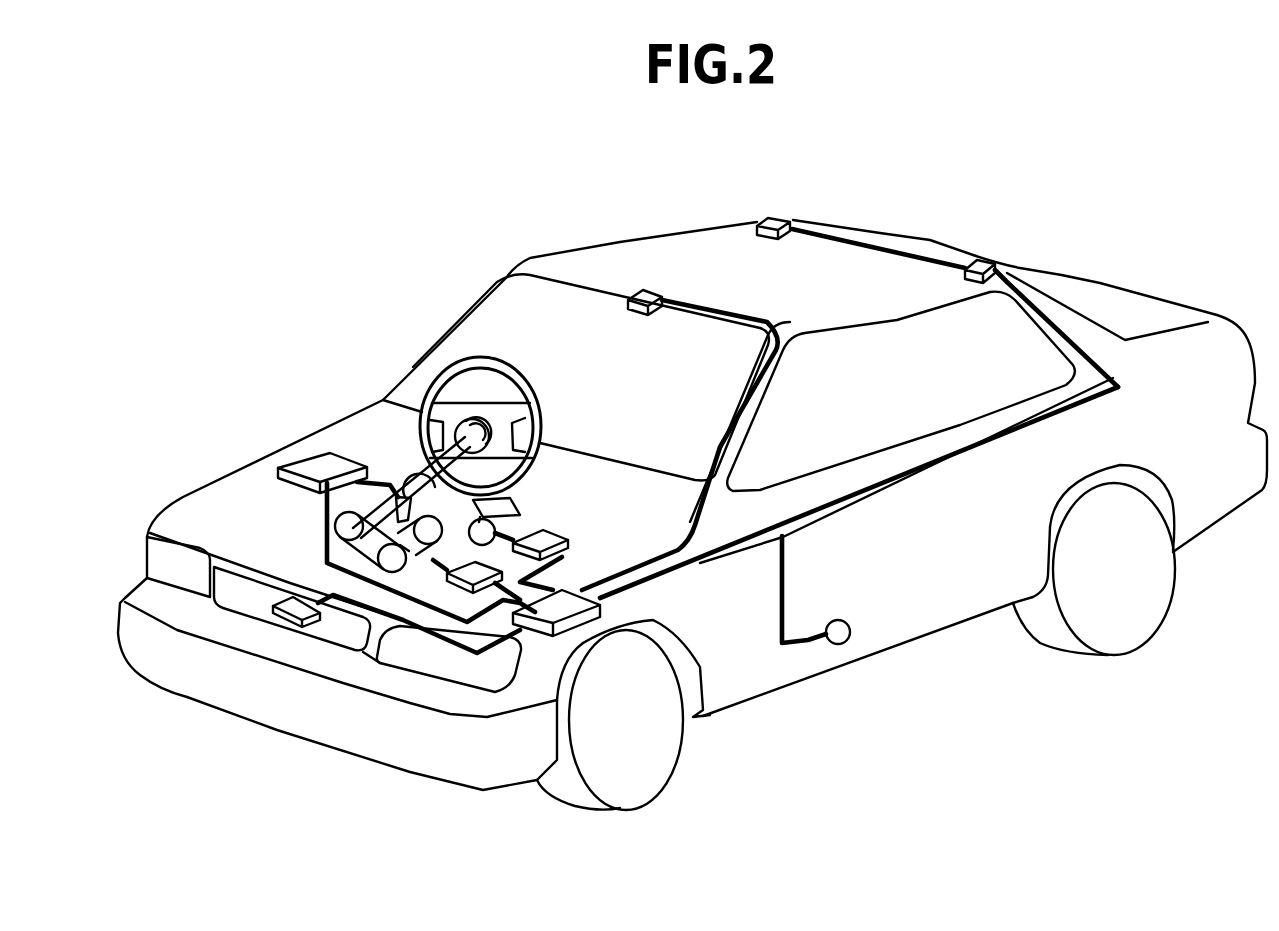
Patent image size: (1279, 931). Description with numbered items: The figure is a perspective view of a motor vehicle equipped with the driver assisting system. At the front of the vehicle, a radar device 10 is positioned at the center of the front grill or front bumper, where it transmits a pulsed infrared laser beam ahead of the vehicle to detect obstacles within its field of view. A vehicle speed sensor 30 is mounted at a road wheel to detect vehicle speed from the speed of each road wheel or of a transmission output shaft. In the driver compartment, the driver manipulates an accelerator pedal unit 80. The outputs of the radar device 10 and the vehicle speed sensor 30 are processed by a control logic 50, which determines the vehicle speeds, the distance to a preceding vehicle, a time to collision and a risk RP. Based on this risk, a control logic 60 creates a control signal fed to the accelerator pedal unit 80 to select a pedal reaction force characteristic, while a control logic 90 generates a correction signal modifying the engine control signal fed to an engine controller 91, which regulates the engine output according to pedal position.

The radar device 10 is at (287, 613).
The vehicle speed sensor 30 is at (837, 645).
The control logic 50 is at (721, 527).
The control logic 60 is at (317, 453).
The accelerator pedal unit 80 is at (420, 497).
The control logic 90 is at (721, 527).
The engine controller 91 is at (588, 631).